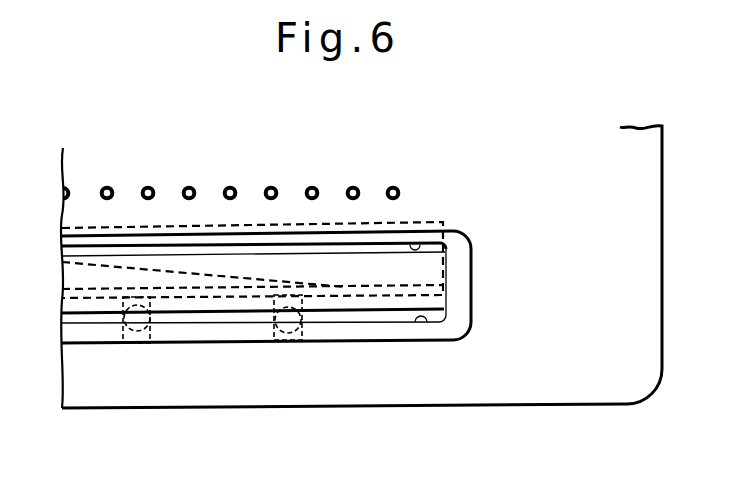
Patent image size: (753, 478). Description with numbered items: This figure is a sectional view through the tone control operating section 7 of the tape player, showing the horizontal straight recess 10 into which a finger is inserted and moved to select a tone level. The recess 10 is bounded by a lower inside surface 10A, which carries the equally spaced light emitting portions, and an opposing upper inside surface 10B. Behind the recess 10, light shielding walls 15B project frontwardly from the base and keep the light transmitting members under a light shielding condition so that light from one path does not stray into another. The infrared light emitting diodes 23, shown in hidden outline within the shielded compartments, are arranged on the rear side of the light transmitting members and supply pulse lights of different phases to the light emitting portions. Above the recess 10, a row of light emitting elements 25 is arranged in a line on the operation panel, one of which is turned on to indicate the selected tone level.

The tone control operating section 7 is at (118, 356).
The light emitting elements 25 is at (196, 186).
The recess 10 is at (428, 268).
The upper inside surface 10B is at (418, 241).
The lower inside surface 10A is at (425, 324).
The light shielding walls 15B is at (225, 337).
The infrared light emitting diodes 23 is at (139, 333).